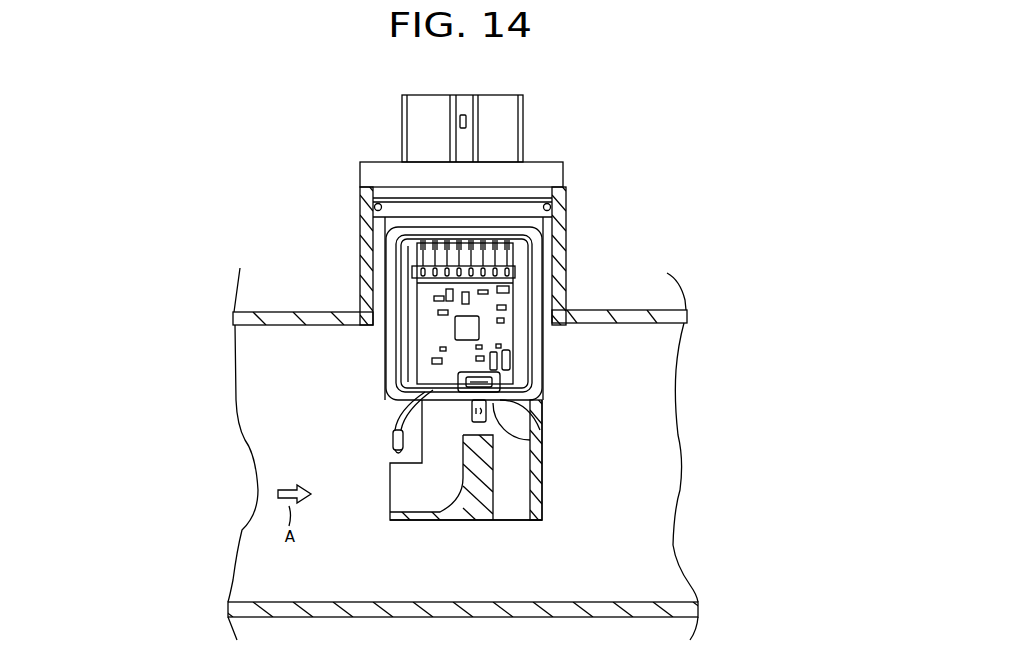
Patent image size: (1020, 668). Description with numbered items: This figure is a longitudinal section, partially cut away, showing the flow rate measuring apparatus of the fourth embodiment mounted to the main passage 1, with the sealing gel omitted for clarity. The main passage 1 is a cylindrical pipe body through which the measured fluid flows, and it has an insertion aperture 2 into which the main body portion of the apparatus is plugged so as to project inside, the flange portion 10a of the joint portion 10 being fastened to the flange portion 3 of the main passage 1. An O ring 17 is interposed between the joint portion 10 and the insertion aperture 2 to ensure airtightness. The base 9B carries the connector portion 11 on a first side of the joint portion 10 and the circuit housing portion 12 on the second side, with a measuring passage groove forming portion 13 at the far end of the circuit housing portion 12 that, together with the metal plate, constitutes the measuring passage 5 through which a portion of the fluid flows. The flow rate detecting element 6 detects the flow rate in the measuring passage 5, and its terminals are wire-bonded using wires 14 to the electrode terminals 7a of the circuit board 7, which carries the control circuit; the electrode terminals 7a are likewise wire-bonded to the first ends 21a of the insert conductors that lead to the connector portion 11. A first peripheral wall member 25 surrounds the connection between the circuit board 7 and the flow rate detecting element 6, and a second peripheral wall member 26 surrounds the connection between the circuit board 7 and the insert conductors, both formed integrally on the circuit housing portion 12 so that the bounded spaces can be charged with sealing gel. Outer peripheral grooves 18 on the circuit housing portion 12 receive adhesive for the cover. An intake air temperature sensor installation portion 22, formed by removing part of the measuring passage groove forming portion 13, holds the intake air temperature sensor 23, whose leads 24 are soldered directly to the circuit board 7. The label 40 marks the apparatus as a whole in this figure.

The main passage 1 is at (269, 304).
The insertion aperture 2 is at (376, 247).
The flange portion 3 is at (363, 258).
The measuring passage 5 is at (540, 462).
The flow rate detecting element 6 is at (540, 425).
The circuit board 7 is at (500, 320).
The electrode terminals 7a is at (515, 274).
The base 9B is at (548, 498).
The joint portion 10 is at (537, 188).
The flange portion 10a is at (366, 168).
The connector portion 11 is at (400, 126).
The circuit housing portion 12 is at (546, 346).
The measuring passage groove forming portion 13 is at (542, 512).
The wires 14 is at (507, 257).
The O ring 17 is at (374, 206).
The outer peripheral grooves 18 is at (527, 368).
The first end 21a is at (535, 238).
The intake air temperature sensor installation portion 22 is at (392, 457).
The intake air temperature sensor 23 is at (392, 441).
The leads 24 is at (398, 415).
The first peripheral wall member 25 is at (535, 392).
The second peripheral wall member 26 is at (430, 291).
The flow measuring device 40 is at (540, 148).